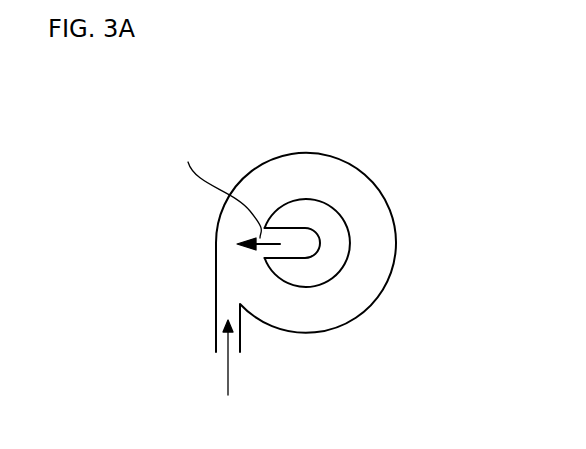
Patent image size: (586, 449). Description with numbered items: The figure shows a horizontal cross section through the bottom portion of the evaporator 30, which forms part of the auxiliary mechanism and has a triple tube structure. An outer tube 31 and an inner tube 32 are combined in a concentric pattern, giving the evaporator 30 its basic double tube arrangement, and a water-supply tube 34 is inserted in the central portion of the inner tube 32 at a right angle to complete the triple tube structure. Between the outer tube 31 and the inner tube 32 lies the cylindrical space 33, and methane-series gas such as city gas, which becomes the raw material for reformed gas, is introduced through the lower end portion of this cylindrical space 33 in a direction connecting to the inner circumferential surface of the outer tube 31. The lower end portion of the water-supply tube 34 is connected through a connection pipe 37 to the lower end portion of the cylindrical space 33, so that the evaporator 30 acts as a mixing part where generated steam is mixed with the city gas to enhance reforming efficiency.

The evaporator 30 is at (194, 226).
The outer tube 31 is at (353, 162).
The inner tube 32 is at (325, 247).
The cylindrical space 33 is at (363, 195).
The water-supply tube 34 is at (348, 253).
The connection pipe 37 is at (289, 228).